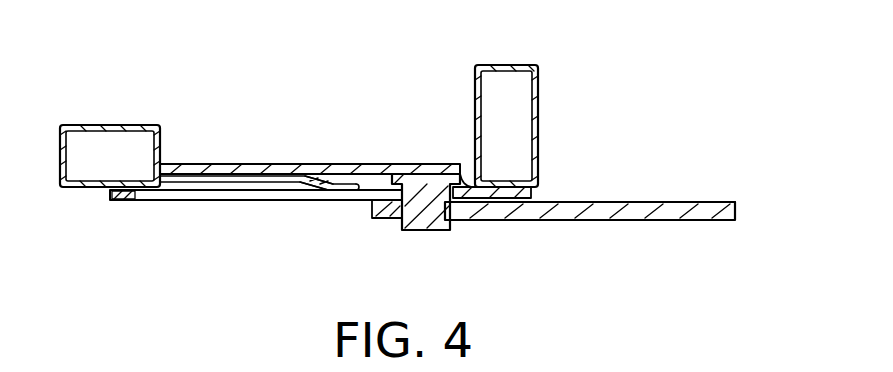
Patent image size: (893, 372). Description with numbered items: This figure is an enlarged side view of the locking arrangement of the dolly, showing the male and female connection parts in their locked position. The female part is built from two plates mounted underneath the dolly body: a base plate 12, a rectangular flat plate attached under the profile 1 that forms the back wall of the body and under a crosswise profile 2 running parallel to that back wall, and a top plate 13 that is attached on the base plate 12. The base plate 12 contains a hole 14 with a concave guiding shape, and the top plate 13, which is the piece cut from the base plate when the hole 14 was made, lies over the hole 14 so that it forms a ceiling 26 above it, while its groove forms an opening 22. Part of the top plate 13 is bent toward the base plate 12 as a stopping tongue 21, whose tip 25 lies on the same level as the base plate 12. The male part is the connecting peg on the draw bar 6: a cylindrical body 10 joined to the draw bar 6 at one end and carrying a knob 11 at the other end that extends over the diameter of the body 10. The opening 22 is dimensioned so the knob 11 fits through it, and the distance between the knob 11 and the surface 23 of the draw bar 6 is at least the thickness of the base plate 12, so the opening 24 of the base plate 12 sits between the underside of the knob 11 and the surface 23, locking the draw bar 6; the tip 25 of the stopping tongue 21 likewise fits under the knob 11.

The profile forming the back wall of the body 1 is at (520, 66).
The crosswise profile 2 is at (108, 126).
The draw bar 6 is at (655, 201).
The cylindrical body 10 is at (425, 231).
The knob 11 is at (285, 197).
The base plate 12 is at (127, 200).
The top plate 13 is at (196, 164).
The hole 14 is at (256, 243).
The stopping tongue 21 is at (345, 191).
The opening 22 is at (333, 172).
The surface of the draw bar 23 is at (600, 199).
The opening of the base plate 24 is at (462, 185).
The tip of the stopping tongue 25 is at (376, 219).
The ceiling 26 is at (259, 197).